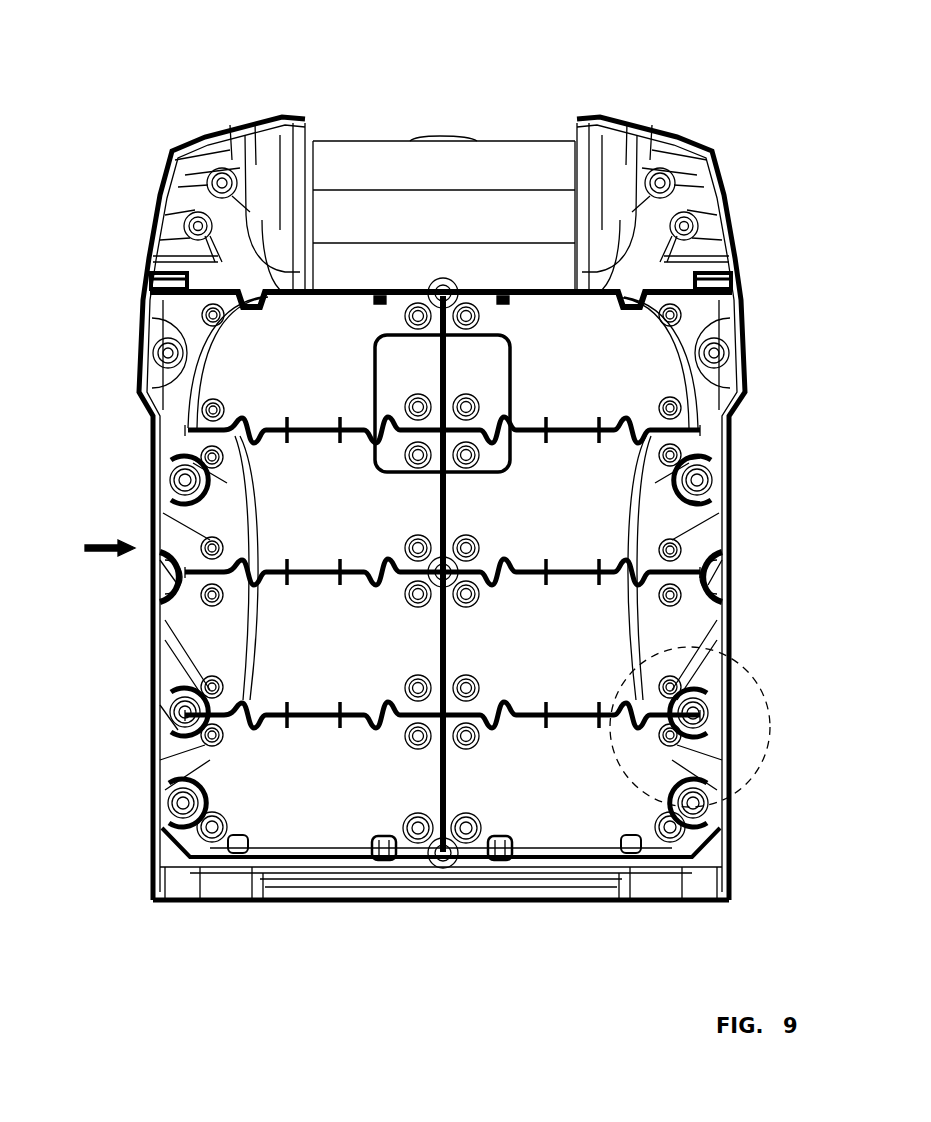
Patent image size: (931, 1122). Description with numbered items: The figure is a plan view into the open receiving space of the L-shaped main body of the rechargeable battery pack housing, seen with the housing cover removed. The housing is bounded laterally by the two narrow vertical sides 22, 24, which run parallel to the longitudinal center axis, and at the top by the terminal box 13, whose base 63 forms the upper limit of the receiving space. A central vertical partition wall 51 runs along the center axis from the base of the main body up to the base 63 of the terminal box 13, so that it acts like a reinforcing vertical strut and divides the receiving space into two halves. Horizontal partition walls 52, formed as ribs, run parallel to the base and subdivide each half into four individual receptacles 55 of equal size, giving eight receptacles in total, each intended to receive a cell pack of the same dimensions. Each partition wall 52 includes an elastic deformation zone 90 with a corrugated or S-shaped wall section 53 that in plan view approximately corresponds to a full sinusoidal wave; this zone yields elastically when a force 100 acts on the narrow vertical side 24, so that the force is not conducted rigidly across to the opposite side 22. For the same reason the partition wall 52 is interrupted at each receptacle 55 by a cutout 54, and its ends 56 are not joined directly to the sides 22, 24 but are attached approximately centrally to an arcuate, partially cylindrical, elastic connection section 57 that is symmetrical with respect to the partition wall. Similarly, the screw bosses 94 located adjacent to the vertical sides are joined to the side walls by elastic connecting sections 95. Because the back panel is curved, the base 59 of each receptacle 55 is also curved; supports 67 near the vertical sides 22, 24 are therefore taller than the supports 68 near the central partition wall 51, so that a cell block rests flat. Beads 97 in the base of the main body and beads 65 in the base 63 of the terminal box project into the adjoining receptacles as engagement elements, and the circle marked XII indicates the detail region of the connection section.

The terminal box 13 is at (445, 213).
The base of the terminal box 63 is at (390, 290).
The beads 65 is at (178, 279).
The vertical side 24 is at (157, 437).
The vertical side 22 is at (733, 437).
The partition wall 51 is at (440, 395).
The elastic deformation zone 90 is at (256, 412).
The partition wall 52 is at (268, 428).
The corrugated wall section 53 is at (254, 444).
The cutout 54 is at (312, 428).
The individual receptacle 55 is at (443, 530).
The base of the individual receptacle 59 is at (180, 482).
The screw boss 94 is at (712, 482).
The elastic connecting section 95 is at (717, 507).
The end of the partition wall 56 is at (185, 570).
The connection section 57 is at (175, 597).
The force 100 is at (88, 545).
The support 67 is at (212, 826).
The support 68 is at (418, 826).
The beads 97 is at (383, 838).
The detail circle XII is at (711, 727).